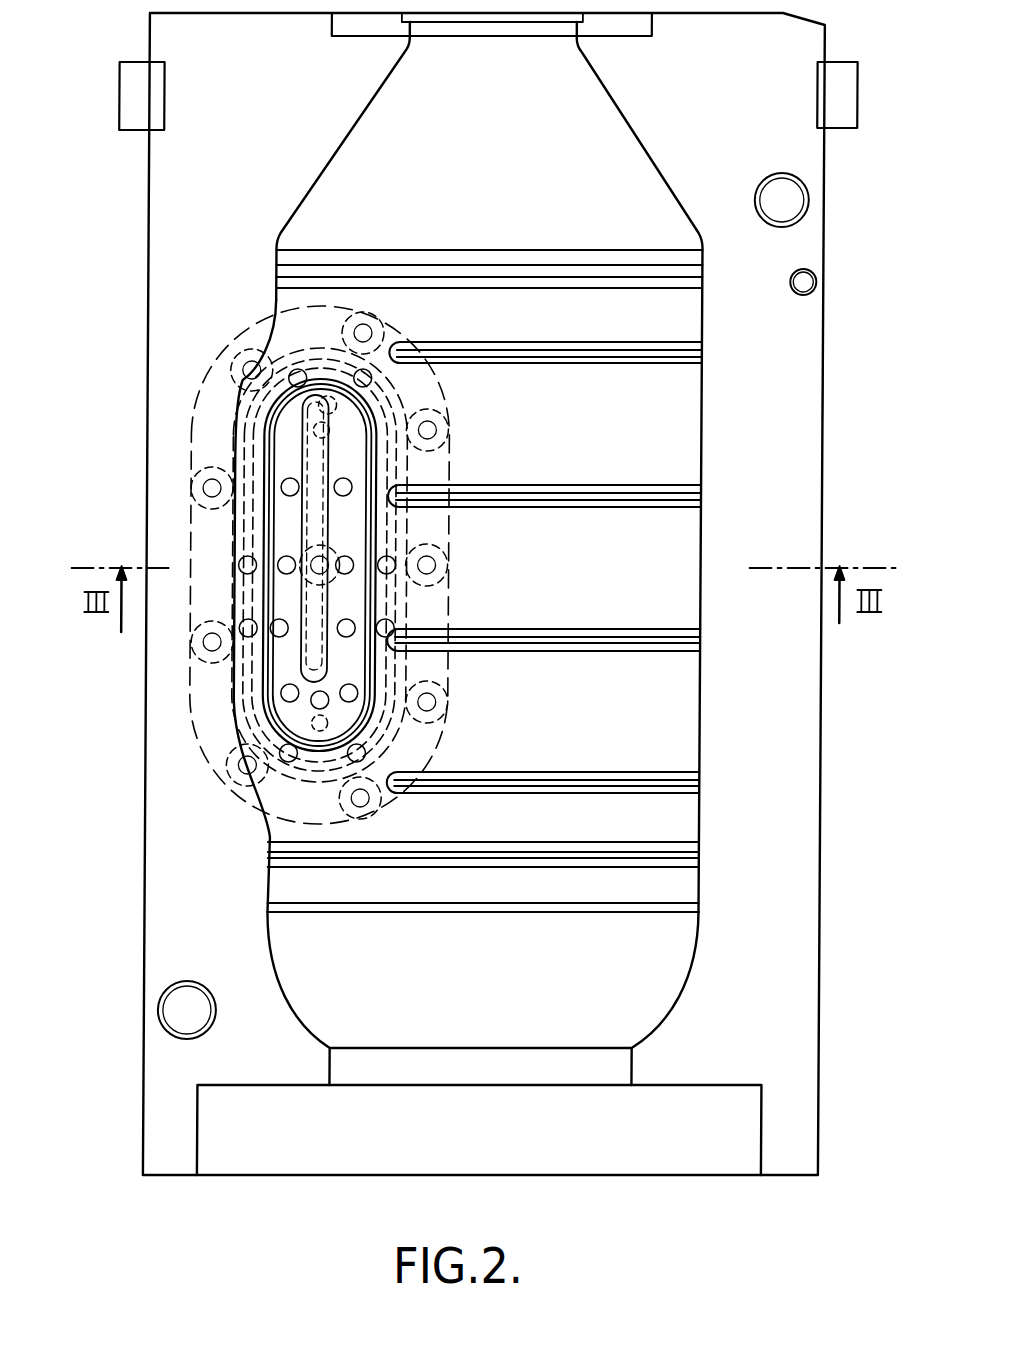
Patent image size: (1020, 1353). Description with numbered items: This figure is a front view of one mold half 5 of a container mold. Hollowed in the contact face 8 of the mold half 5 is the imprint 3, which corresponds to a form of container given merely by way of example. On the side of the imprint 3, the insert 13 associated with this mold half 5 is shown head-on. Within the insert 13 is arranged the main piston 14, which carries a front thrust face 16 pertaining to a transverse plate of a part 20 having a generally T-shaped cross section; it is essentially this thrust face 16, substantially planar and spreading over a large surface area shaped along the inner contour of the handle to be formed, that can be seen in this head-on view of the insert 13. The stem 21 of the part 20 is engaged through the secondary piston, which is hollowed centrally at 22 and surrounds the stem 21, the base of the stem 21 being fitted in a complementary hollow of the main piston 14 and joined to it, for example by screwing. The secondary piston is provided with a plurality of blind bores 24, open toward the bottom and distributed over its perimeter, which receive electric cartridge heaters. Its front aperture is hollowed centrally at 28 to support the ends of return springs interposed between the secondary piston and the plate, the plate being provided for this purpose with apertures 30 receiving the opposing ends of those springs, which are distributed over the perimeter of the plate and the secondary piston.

The imprint 3 is at (567, 441).
The mold half 5 is at (826, 453).
The contact face 8 is at (757, 403).
The insert 13 is at (275, 606).
The main piston 14 is at (265, 693).
The thrust face 16 is at (303, 527).
The part 20 is at (285, 670).
The stem 21 is at (283, 540).
The central hollow 22 is at (232, 488).
The blind bores 24 is at (380, 645).
The central hollowing of aperture 28 is at (321, 478).
The apertures 30 is at (233, 700).